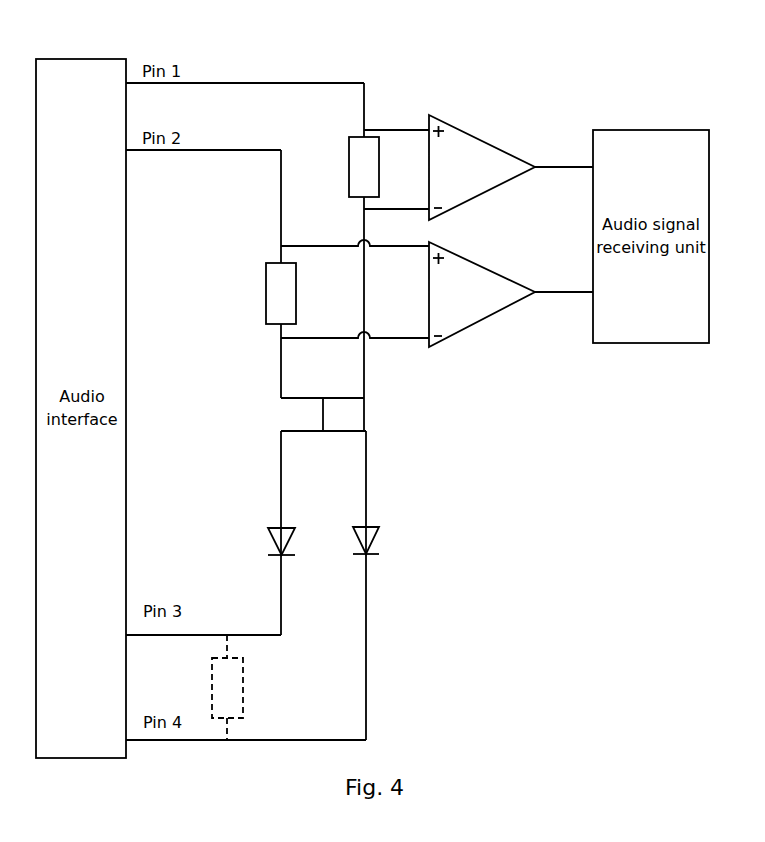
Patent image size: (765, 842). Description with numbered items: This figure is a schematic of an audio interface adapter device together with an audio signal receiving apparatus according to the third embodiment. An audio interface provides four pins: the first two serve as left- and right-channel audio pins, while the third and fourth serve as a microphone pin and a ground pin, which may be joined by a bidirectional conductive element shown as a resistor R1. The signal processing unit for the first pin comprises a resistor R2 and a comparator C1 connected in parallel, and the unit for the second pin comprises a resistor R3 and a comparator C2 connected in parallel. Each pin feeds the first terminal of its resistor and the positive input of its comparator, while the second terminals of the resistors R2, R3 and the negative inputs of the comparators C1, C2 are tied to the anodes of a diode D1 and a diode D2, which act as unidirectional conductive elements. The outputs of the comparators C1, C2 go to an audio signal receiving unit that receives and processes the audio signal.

The resistor R1 is at (227, 687).
The resistor R2 is at (364, 167).
The resistor R3 is at (281, 293).
The comparator C1 is at (511, 179).
The comparator C2 is at (511, 306).
The diode D1 is at (260, 533).
The diode D2 is at (380, 585).